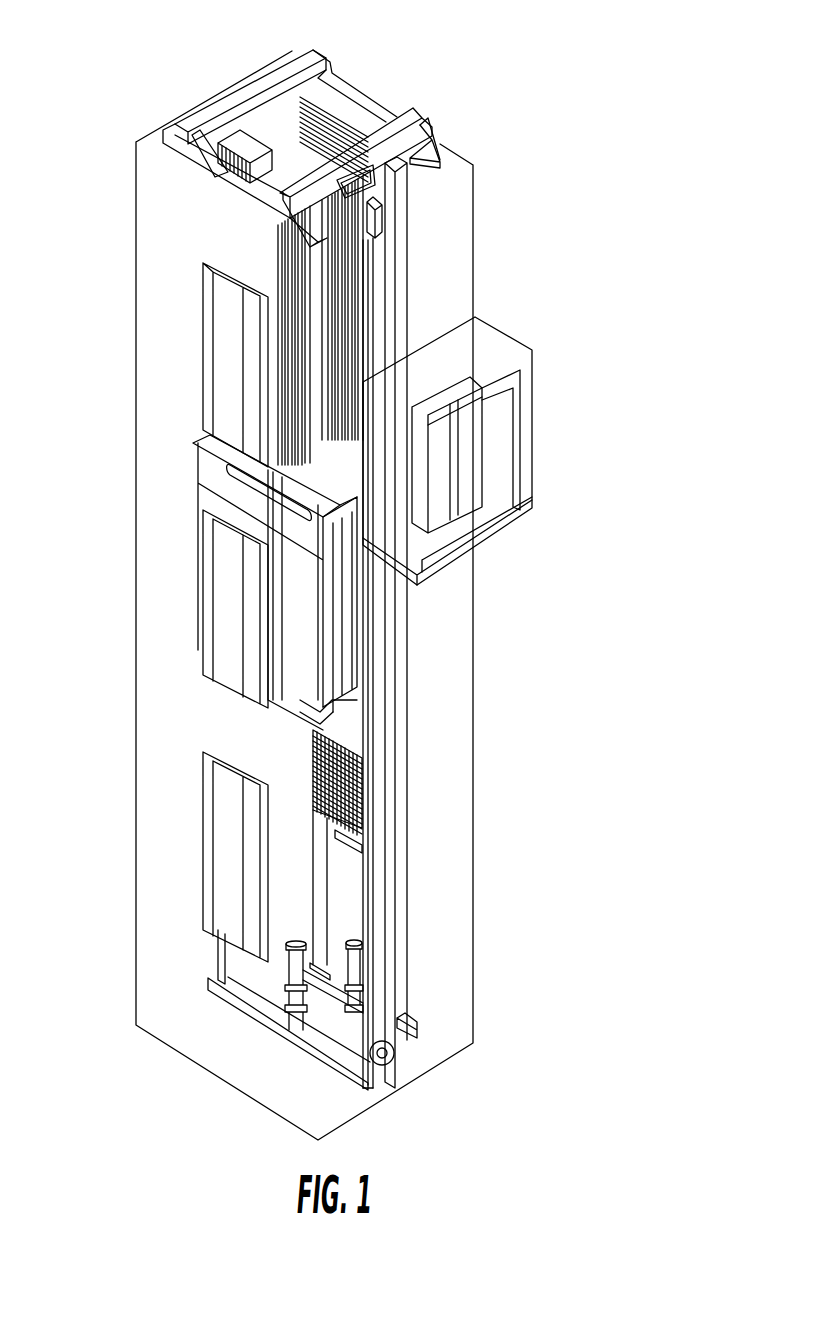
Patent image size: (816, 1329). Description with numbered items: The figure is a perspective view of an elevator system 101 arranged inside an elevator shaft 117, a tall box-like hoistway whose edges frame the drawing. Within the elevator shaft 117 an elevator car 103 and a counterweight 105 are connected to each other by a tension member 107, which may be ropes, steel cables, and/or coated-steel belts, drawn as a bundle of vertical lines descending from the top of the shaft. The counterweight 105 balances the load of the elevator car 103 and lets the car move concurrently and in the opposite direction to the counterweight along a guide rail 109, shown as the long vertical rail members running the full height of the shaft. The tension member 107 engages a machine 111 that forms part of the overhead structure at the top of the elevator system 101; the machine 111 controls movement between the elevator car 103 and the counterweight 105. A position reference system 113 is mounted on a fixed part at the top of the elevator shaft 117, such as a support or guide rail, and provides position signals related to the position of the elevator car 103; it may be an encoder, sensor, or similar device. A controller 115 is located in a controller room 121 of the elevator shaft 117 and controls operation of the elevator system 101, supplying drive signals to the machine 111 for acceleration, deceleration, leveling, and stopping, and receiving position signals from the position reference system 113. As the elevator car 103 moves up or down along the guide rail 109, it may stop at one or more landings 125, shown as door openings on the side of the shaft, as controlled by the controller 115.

The elevator system 101 is at (531, 96).
The elevator car 103 is at (310, 640).
The counterweight 105 is at (362, 797).
The tension member 107 is at (313, 362).
The guide rail 109 is at (382, 725).
The machine 111 is at (230, 133).
The position reference system 113 is at (378, 222).
The controller 115 is at (478, 452).
The elevator shaft 117 is at (179, 724).
The controller room 121 is at (535, 350).
The landings 125 is at (198, 350).